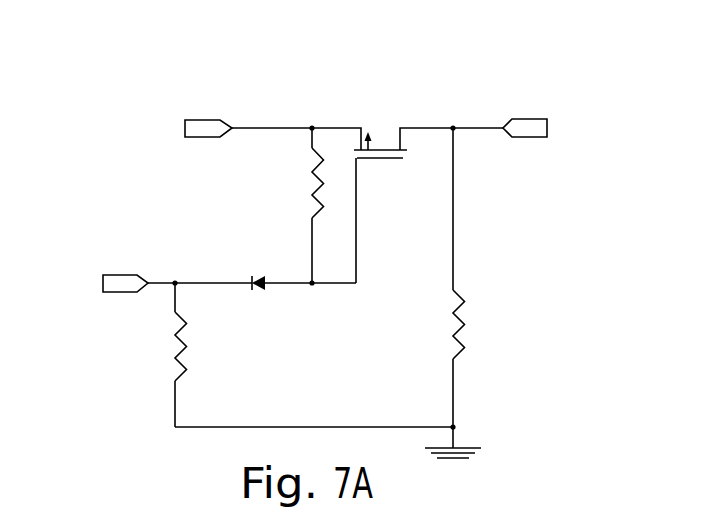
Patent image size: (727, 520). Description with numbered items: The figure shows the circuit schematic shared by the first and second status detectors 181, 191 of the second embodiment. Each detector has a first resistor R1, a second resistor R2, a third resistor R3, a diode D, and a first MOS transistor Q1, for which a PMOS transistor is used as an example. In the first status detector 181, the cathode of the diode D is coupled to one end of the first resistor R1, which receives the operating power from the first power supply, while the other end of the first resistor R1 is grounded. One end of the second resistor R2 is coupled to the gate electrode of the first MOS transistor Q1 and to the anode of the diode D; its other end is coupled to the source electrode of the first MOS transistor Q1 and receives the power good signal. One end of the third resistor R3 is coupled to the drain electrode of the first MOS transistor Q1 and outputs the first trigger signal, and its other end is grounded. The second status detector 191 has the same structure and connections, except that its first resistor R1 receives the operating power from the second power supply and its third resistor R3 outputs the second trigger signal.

The first status detector 181 is at (455, 69).
The second status detector 191 is at (347, 277).
The first resistor R1 is at (195, 355).
The second resistor R2 is at (303, 205).
The third resistor R3 is at (473, 288).
The first MOS transistor Q1 is at (380, 207).
The diode D is at (262, 298).